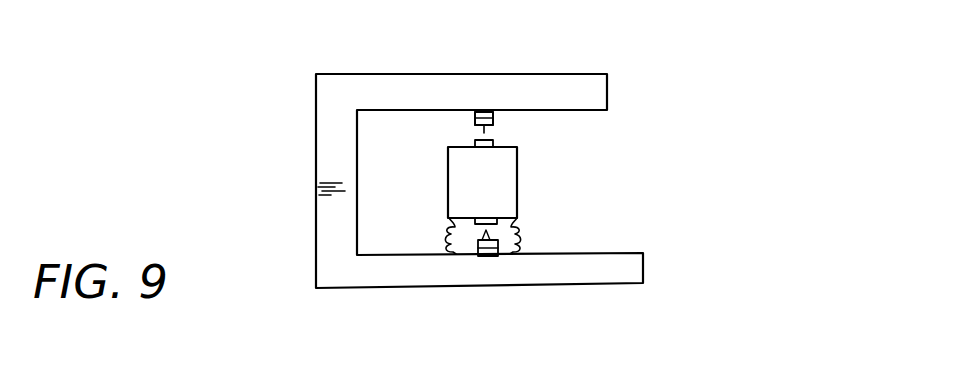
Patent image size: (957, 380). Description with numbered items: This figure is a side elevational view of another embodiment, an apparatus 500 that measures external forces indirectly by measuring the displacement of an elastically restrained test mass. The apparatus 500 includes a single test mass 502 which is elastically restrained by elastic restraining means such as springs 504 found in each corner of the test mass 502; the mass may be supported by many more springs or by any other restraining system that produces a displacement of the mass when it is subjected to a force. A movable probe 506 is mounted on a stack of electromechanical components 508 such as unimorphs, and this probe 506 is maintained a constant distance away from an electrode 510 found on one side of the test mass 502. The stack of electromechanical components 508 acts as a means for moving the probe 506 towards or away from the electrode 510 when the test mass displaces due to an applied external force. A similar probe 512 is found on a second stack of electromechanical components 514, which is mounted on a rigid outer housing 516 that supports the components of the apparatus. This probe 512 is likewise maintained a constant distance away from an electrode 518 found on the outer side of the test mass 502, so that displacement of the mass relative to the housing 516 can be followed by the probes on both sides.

The apparatus 500 is at (697, 150).
The test mass 502 is at (507, 170).
The springs 504 is at (442, 236).
The movable probe 506 is at (497, 240).
The stack of electromechanical components 508 is at (485, 256).
The electrode 510 is at (495, 218).
The probe 512 is at (475, 130).
The stack of electromechanical components 514 is at (483, 114).
The rigid outer housing 516 is at (627, 273).
The electrode 518 is at (493, 143).